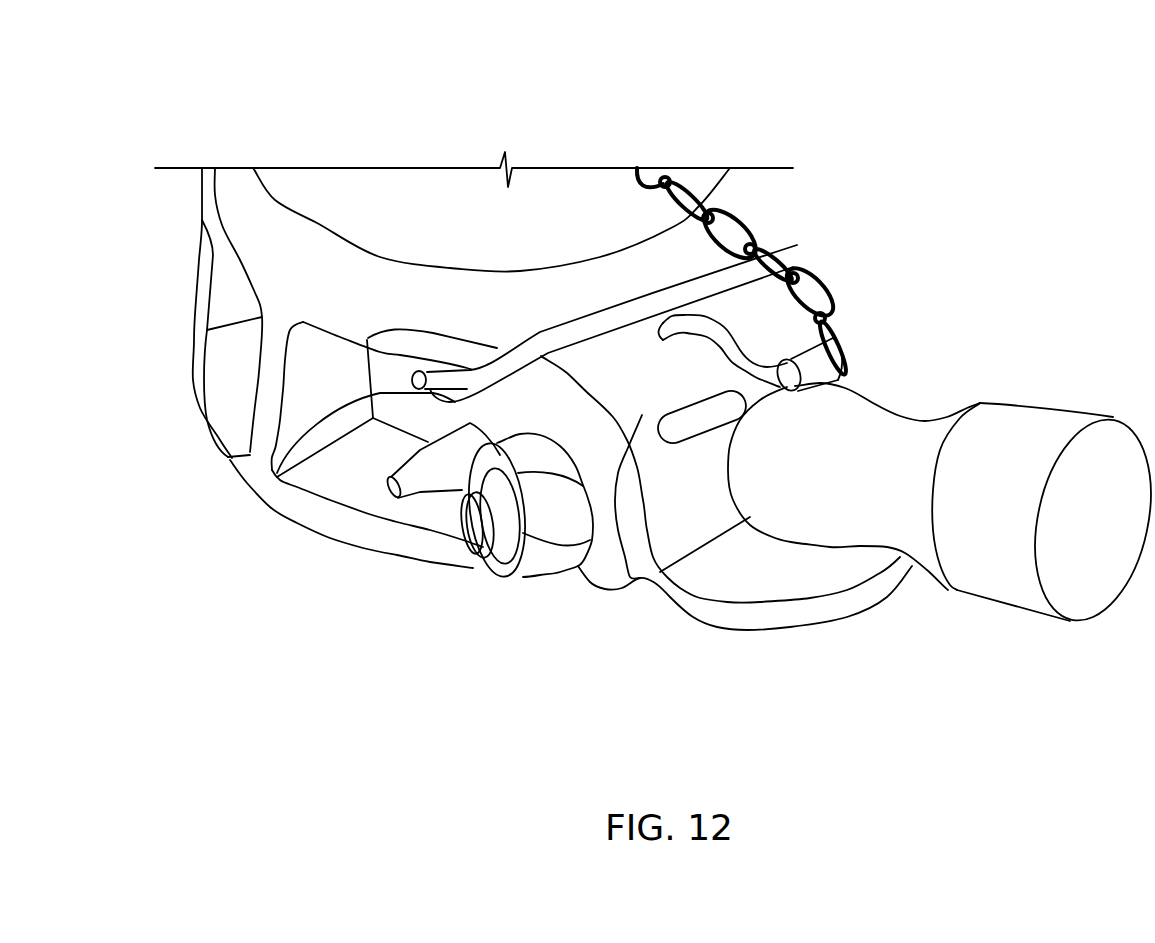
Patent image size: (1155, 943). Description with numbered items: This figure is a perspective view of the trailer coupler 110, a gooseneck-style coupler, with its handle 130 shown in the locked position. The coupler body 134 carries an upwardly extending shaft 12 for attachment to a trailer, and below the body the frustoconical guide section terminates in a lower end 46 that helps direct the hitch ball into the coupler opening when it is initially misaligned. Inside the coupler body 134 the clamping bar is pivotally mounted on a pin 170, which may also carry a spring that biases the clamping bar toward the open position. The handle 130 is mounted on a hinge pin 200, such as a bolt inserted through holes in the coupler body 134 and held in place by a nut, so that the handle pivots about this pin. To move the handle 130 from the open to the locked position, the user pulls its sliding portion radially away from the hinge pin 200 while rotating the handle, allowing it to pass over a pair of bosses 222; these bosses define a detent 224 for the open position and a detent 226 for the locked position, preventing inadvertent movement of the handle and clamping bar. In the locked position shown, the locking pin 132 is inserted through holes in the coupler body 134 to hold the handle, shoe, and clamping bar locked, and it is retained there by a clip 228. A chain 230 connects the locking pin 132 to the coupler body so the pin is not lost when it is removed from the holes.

The shaft 12 is at (535, 180).
The lower end 46 is at (287, 520).
The trailer coupler 110 is at (483, 180).
The handle 130 is at (1007, 433).
The locking pin 132 is at (427, 487).
The coupler body 134 is at (222, 202).
The pin 170 is at (258, 457).
The hinge pin 200 is at (468, 562).
The bosses 222 is at (810, 370).
The detent 224 is at (637, 580).
The detent 226 is at (688, 503).
The clip 228 is at (678, 288).
The chain 230 is at (800, 268).